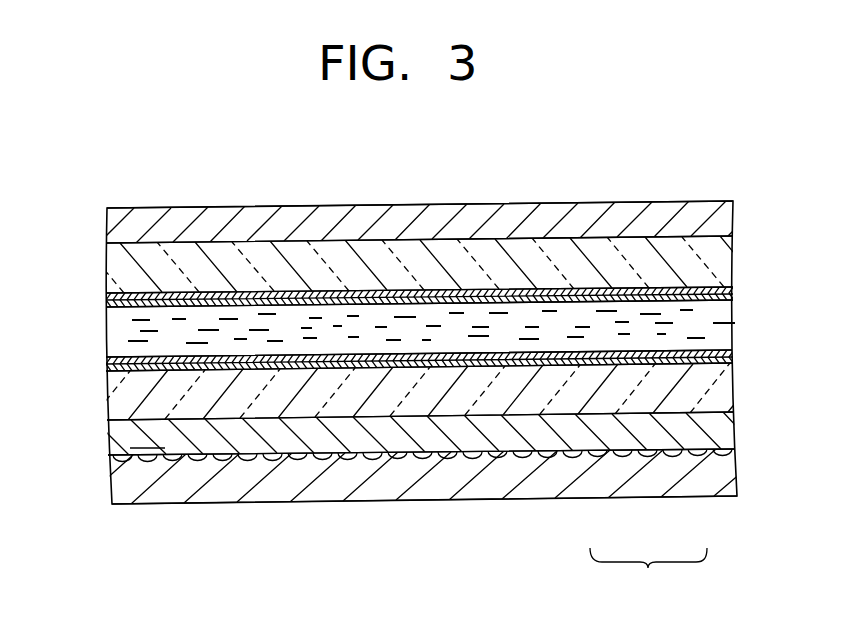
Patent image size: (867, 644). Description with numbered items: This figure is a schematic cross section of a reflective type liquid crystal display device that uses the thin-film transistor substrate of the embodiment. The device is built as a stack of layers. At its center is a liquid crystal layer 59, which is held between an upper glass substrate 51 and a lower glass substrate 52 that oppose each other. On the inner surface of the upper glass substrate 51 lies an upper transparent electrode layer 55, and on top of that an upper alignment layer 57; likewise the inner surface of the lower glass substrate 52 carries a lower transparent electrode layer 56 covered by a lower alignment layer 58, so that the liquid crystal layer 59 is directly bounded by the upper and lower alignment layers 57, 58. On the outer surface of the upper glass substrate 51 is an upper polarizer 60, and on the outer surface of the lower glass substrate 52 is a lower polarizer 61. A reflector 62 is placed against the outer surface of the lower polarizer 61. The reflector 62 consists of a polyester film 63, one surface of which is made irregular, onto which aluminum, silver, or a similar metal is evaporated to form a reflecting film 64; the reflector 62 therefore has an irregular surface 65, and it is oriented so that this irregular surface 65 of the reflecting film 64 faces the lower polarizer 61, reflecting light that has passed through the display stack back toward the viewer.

The upper polarizer 60 is at (715, 219).
The upper glass substrate 51 is at (715, 262).
The upper transparent electrode layer 55 is at (143, 290).
The upper alignment layer 57 is at (112, 314).
The liquid crystal layer 59 is at (715, 326).
The lower alignment layer 58 is at (142, 363).
The lower transparent electrode layer 56 is at (135, 377).
The lower glass substrate 52 is at (713, 383).
The lower polarizer 61 is at (715, 432).
The reflector 62 is at (648, 576).
The polyester film 63 is at (617, 473).
The reflecting film 64 is at (686, 451).
The irregular surface 65 is at (182, 456).